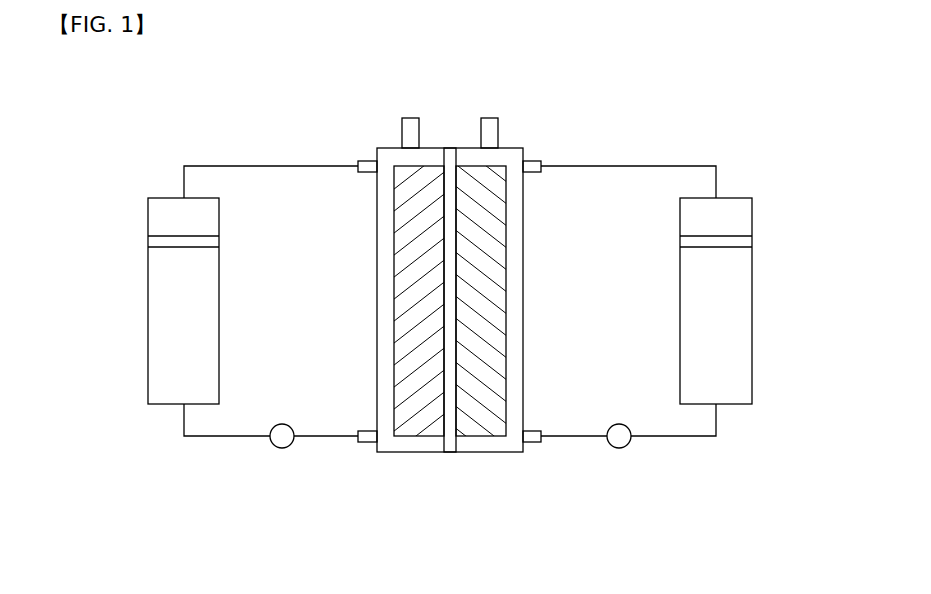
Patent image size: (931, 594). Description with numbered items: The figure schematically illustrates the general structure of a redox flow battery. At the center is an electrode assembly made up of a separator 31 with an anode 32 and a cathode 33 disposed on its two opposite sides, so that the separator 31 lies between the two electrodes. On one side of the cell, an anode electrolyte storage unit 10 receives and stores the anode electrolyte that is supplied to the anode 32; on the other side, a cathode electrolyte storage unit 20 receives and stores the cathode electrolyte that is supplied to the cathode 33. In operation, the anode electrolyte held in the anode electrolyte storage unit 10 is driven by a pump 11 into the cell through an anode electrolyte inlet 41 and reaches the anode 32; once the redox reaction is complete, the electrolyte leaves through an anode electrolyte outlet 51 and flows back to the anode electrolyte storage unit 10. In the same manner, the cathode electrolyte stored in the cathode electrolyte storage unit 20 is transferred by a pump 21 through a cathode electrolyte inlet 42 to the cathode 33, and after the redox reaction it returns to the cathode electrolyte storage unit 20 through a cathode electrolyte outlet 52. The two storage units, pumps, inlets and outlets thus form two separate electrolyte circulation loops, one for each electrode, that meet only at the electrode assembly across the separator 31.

The anode electrolyte storage unit 10 is at (148, 318).
The pump 11 is at (282, 448).
The cathode electrolyte storage unit 20 is at (752, 318).
The pump 21 is at (619, 448).
The separator 31 is at (447, 148).
The anode 32 is at (412, 453).
The cathode 33 is at (487, 453).
The anode electrolyte inlet 41 is at (365, 443).
The cathode electrolyte inlet 42 is at (530, 443).
The anode electrolyte outlet 51 is at (365, 160).
The cathode electrolyte outlet 52 is at (540, 160).